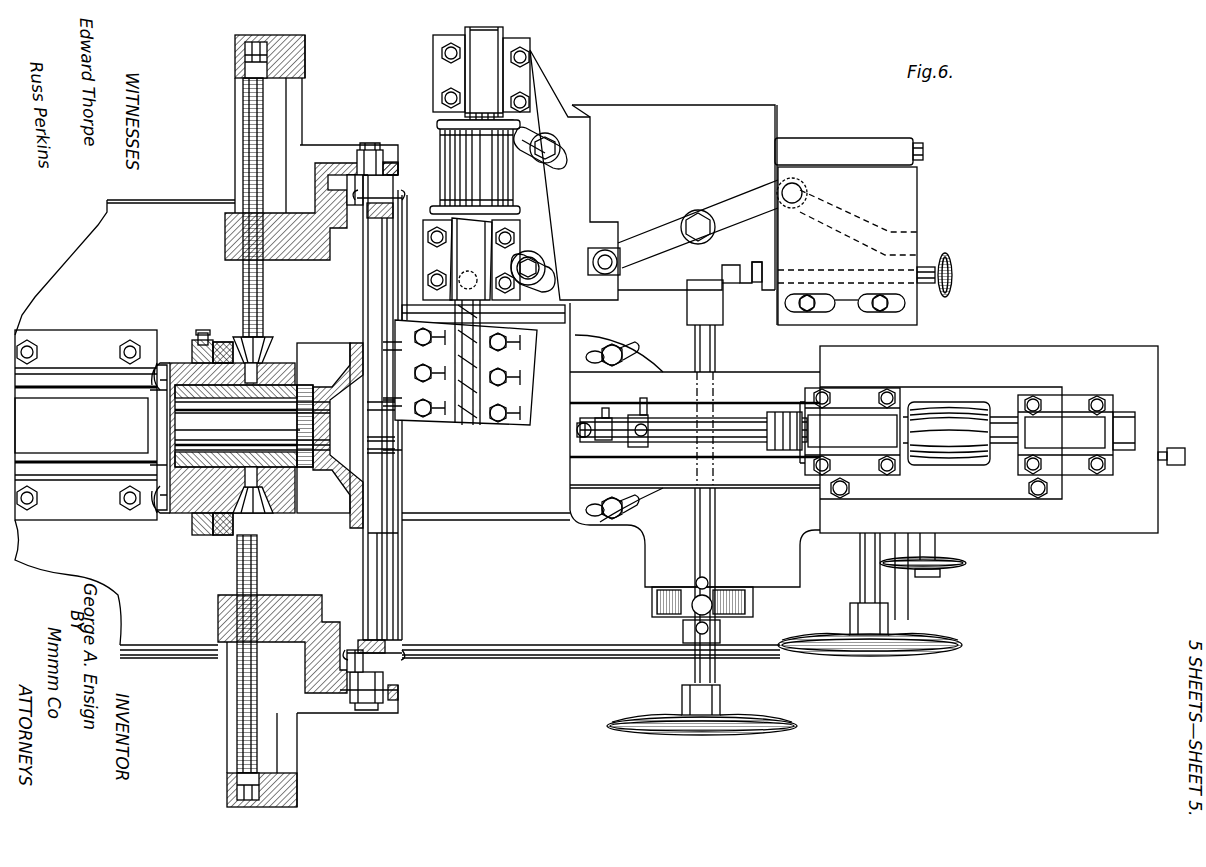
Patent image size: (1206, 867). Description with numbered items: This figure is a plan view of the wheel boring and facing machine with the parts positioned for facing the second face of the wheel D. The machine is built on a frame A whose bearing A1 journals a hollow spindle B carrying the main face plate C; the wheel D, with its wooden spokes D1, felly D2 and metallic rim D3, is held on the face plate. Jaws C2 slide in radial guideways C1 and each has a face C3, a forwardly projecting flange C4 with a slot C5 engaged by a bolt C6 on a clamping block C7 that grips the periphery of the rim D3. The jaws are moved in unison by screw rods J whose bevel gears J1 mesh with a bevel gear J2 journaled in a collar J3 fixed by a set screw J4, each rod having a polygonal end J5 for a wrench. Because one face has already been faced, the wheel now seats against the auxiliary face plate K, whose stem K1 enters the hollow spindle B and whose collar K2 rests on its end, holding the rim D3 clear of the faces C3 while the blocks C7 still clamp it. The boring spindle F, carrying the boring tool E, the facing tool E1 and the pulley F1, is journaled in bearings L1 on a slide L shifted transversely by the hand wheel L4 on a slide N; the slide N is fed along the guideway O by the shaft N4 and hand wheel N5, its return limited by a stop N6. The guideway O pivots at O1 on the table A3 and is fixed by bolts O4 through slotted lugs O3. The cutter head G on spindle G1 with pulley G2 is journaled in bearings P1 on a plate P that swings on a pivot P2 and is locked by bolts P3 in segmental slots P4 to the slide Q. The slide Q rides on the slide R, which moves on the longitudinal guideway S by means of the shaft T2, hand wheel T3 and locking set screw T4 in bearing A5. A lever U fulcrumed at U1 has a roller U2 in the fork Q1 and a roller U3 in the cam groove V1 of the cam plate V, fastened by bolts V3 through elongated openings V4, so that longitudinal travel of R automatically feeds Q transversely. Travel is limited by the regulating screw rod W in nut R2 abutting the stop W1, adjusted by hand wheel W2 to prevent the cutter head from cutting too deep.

The frame A is at (157, 212).
The bearing A1 is at (72, 340).
The table A3 is at (516, 523).
The bearing A5 is at (658, 606).
The hollow spindle B is at (180, 360).
The main face plate C is at (206, 126).
The radially-disposed guideways C1 is at (290, 95).
The jaws C2 is at (225, 240).
The face C3 is at (315, 205).
The forwardly-projecting flange C4 is at (333, 163).
The slot C5 is at (372, 150).
The bolt C6 is at (380, 148).
The clamping block C7 is at (360, 185).
The wheel D is at (355, 552).
The wooden spokes D1 is at (375, 288).
The felly D2 is at (368, 212).
The metallic tire or rim D3 is at (402, 200).
The boring tool E is at (604, 408).
The facing tool E1 is at (645, 400).
The retractable boring spindle F is at (735, 420).
The pulley F1 is at (945, 402).
The revoluble cutter head G is at (480, 410).
The spindle G1 is at (480, 314).
The pulley G2 is at (505, 182).
The screw rods J is at (243, 166).
The bevel gear wheel J1 is at (266, 345).
The bevel gear wheel J2 is at (222, 342).
The collar J3 is at (192, 343).
The set screw J4 is at (205, 332).
The polygonal outer end J5 is at (248, 57).
The auxiliary face plate K is at (345, 372).
The stem K1 is at (285, 426).
The collar K2 is at (302, 470).
The carriage or slide L is at (972, 495).
The bearings L1 is at (855, 398).
The hand wheel L4 is at (966, 566).
The slide or carriage N is at (1082, 532).
The shaft N4 is at (860, 580).
The hand wheel N5 is at (930, 656).
The stop N6 is at (1176, 450).
The guideway O is at (770, 374).
The pivot O1 is at (580, 436).
The slotted lugs O3 is at (648, 365).
The bolts O4 is at (613, 350).
The plate P is at (548, 95).
The bearings P1 is at (448, 74).
The pivot P2 is at (483, 311).
The bolts P3 is at (545, 137).
The segmental slots P4 is at (560, 158).
The slide or carriage Q is at (592, 124).
The fork or bearing Q1 is at (606, 230).
The slide or carriage R is at (685, 110).
The nut R2 is at (757, 262).
The longitudinal guideway S is at (828, 142).
The transverse shaft T2 is at (716, 556).
The hand wheel T3 is at (660, 735).
The set screw T4 is at (695, 612).
The lever U is at (655, 228).
The fulcrum U1 is at (700, 212).
The friction roller U2 is at (618, 270).
The friction roller U3 is at (792, 208).
The cam plate V is at (917, 198).
The cam groove V1 is at (860, 212).
The bolts V3 is at (807, 313).
The elongated openings V4 is at (862, 312).
The regulating screw rod W is at (843, 280).
The stop W1 is at (722, 270).
The hand wheel W2 is at (952, 275).